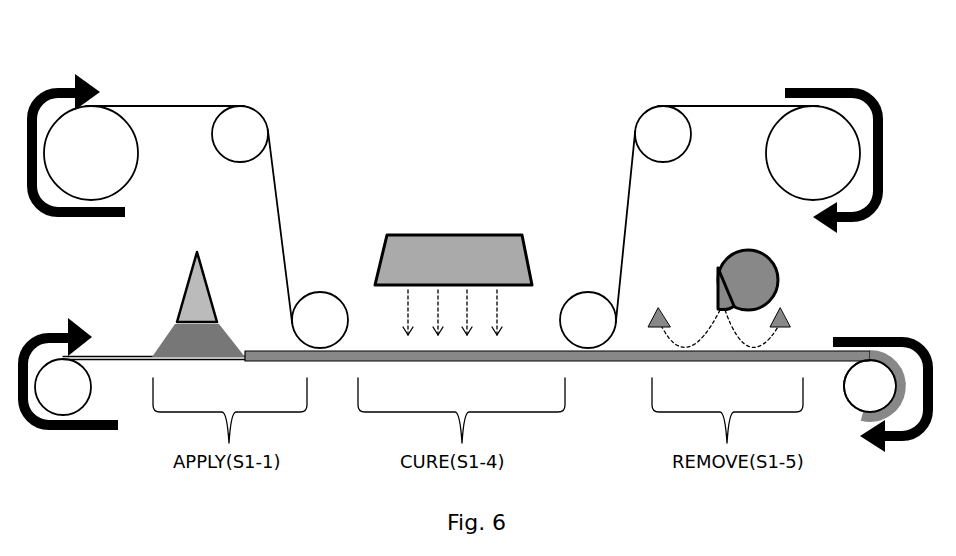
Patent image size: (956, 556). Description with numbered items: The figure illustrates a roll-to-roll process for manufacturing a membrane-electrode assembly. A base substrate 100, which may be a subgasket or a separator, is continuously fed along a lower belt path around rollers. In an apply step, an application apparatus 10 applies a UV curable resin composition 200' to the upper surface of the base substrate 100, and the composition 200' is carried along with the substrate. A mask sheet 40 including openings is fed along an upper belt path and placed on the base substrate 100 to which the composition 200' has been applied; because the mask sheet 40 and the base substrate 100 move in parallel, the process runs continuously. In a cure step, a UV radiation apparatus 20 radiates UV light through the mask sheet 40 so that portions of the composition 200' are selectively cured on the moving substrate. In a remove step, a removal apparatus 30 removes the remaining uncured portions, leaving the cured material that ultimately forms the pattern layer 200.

The application apparatus 10 is at (185, 265).
The UV radiation apparatus 20 is at (470, 212).
The removal apparatus 30 is at (730, 250).
The mask sheet 40 is at (205, 106).
The base substrate 100 is at (97, 360).
The UV curable resin composition 200' is at (499, 351).
The pattern layer 200 is at (499, 351).